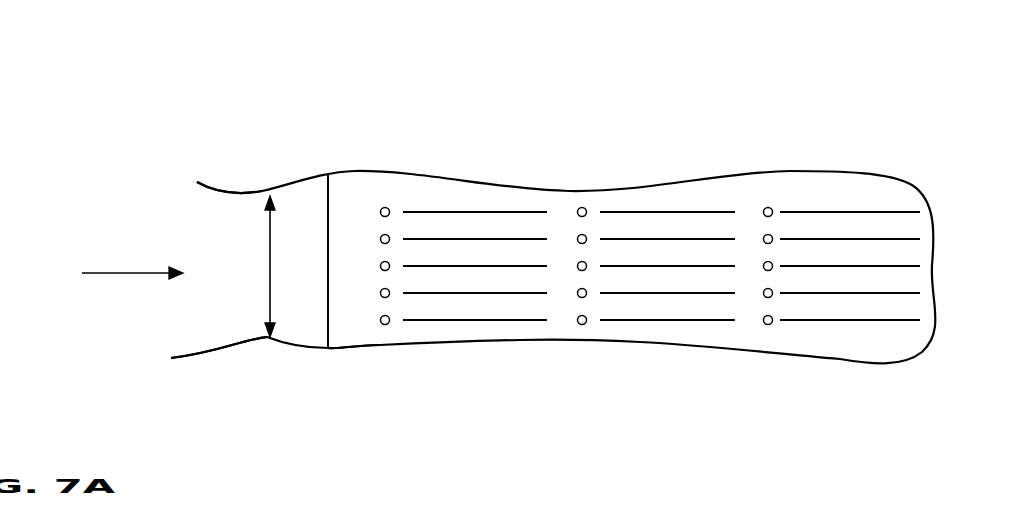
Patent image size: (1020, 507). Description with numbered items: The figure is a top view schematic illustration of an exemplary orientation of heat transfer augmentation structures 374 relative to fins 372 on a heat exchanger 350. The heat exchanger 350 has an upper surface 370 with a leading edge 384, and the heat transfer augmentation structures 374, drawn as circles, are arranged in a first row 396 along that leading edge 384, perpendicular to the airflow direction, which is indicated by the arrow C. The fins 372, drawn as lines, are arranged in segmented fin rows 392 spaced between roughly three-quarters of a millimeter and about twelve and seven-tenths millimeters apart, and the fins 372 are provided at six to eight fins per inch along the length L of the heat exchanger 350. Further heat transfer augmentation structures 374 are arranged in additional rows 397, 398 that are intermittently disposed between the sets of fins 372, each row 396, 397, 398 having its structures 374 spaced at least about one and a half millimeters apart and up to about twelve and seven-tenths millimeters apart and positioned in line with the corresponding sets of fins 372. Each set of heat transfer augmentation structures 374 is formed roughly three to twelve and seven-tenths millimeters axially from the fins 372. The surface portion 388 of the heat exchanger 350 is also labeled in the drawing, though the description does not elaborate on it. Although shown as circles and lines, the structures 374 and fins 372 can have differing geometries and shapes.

The upper surface 370 is at (820, 336).
The fins 372 is at (483, 238).
The heat transfer augmentation structures 374 is at (380, 212).
The leading edge 384 is at (328, 247).
The pressure side surface 388 is at (408, 333).
The heat exchanger 350 is at (347, 334).
The segmented fin rows 392 is at (462, 138).
The first row 396 is at (377, 184).
The row 397 is at (570, 183).
The row 398 is at (760, 178).
The length L is at (268, 248).
The flow direction C is at (127, 268).